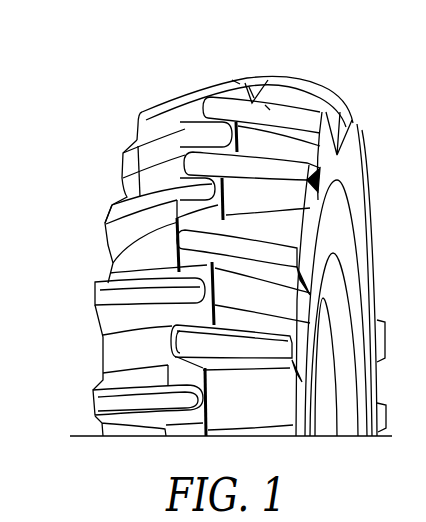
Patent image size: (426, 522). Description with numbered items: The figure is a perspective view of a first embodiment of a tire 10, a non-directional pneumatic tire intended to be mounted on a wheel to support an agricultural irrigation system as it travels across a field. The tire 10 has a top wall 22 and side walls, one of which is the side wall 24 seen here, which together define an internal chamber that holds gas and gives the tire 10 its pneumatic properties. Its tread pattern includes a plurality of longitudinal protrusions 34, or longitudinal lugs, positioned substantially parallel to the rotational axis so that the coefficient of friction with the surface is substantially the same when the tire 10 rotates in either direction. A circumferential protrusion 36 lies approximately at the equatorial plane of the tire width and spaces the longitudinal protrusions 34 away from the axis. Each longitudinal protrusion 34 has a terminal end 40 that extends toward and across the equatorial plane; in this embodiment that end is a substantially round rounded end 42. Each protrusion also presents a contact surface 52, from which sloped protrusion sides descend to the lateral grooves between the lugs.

The tire 10 is at (128, 78).
The top wall 22 is at (194, 112).
The side wall 24 is at (360, 192).
The longitudinal protrusion 34 is at (137, 145).
The circumferential protrusion 36 is at (110, 274).
The terminal end 40 is at (122, 182).
The rounded end 42 is at (85, 196).
The contact surface 52 is at (232, 80).